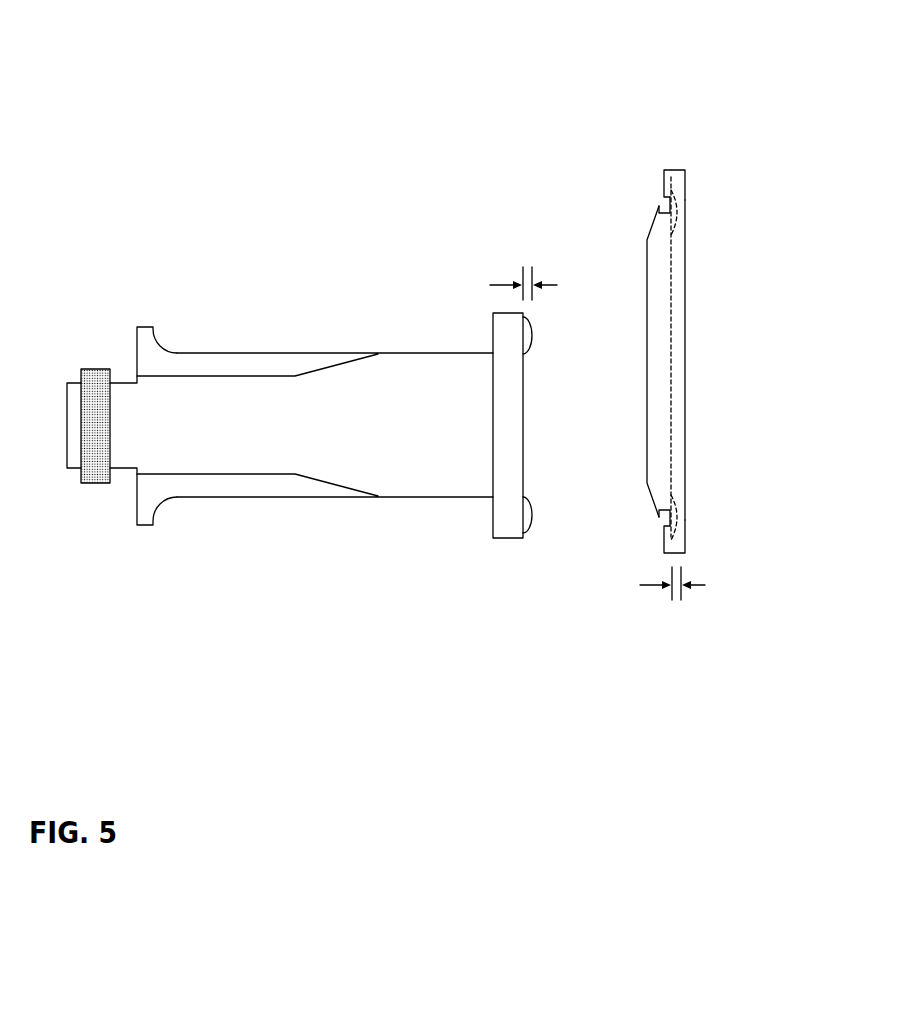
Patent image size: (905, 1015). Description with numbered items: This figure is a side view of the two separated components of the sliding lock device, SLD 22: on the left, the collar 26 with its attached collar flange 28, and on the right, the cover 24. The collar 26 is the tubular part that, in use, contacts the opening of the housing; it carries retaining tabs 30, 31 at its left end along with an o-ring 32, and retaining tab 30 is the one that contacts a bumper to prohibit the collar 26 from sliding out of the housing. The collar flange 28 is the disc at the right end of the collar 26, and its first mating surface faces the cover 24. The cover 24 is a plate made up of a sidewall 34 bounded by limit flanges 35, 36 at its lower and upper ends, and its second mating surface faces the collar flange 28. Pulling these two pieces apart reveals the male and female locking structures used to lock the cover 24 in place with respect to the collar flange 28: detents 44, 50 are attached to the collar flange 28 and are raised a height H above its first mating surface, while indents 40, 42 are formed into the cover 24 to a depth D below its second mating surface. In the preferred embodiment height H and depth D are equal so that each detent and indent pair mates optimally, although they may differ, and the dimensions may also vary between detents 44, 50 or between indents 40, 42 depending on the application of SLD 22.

The SLD 22 is at (368, 145).
The cover 24 is at (727, 357).
The collar 26 is at (336, 520).
The collar flange 28 is at (503, 538).
The retaining tab 30 is at (143, 344).
The retaining tab 31 is at (148, 512).
The o-ring 32 is at (95, 483).
The sidewall 34 is at (653, 250).
The limit flange 35 is at (677, 547).
The limit flange 36 is at (667, 170).
The indent 40 is at (677, 210).
The indent 42 is at (677, 512).
The detent 44 is at (531, 516).
The detent 50 is at (531, 335).